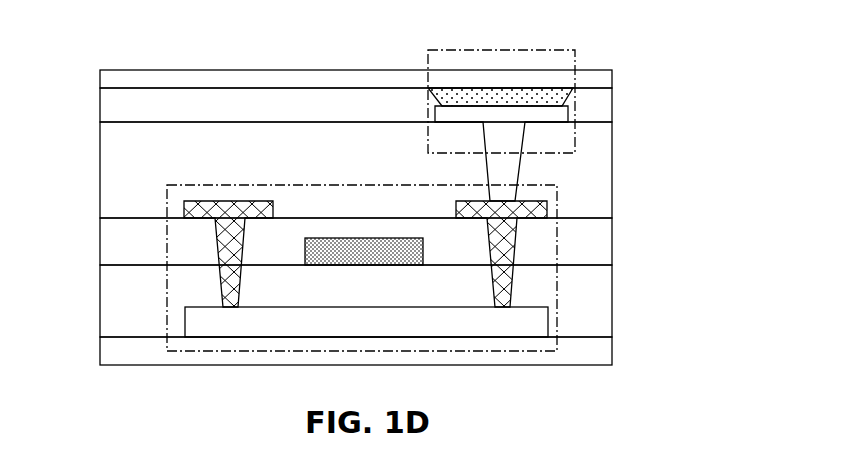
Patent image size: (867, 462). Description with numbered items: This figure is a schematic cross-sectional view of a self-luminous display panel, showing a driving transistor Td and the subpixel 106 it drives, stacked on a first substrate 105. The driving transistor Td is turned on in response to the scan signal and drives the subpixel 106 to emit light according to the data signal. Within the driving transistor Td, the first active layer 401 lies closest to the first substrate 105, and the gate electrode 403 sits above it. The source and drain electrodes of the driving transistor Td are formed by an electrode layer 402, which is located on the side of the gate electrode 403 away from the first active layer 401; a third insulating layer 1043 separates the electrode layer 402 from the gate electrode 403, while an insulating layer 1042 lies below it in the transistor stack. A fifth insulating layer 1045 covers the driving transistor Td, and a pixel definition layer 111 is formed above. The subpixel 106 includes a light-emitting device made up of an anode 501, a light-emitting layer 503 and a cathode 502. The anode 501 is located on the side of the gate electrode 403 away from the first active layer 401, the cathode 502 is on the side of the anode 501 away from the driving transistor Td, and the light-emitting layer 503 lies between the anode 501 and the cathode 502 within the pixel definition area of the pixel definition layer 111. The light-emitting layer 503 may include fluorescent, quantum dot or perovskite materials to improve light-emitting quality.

The first substrate 105 is at (127, 353).
The gate insulating layer 1042 is at (598, 297).
The third insulating layer 1043 is at (155, 252).
The fifth insulating layer 1045 is at (140, 172).
The pixel definition layer 111 is at (125, 108).
The cathode 502 is at (595, 79).
The first active layer 401 is at (183, 325).
The gate electrode 403 is at (335, 252).
The electrode layer 402 is at (533, 216).
The anode 501 is at (503, 162).
The light-emitting layer 503 is at (562, 108).
The subpixel 106 is at (577, 54).
The driving transistor Td is at (555, 250).